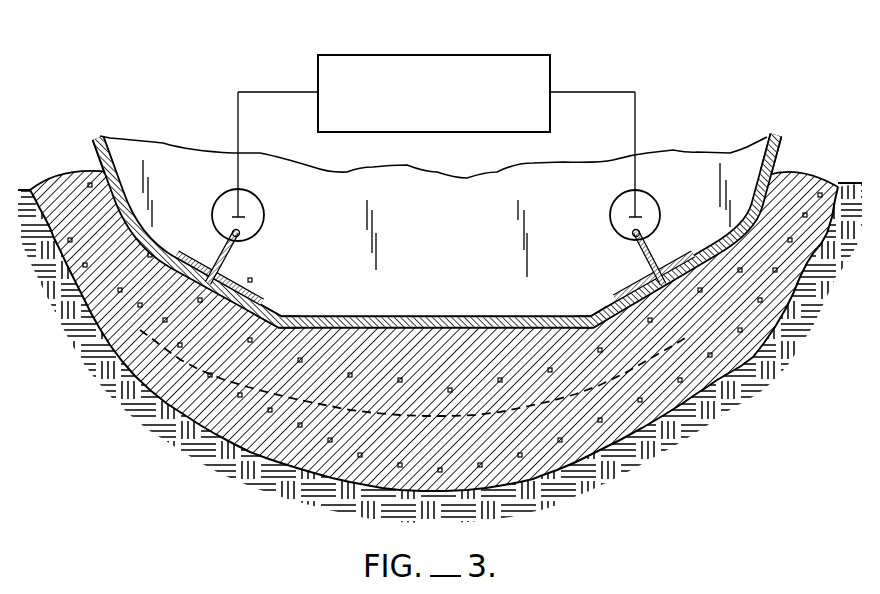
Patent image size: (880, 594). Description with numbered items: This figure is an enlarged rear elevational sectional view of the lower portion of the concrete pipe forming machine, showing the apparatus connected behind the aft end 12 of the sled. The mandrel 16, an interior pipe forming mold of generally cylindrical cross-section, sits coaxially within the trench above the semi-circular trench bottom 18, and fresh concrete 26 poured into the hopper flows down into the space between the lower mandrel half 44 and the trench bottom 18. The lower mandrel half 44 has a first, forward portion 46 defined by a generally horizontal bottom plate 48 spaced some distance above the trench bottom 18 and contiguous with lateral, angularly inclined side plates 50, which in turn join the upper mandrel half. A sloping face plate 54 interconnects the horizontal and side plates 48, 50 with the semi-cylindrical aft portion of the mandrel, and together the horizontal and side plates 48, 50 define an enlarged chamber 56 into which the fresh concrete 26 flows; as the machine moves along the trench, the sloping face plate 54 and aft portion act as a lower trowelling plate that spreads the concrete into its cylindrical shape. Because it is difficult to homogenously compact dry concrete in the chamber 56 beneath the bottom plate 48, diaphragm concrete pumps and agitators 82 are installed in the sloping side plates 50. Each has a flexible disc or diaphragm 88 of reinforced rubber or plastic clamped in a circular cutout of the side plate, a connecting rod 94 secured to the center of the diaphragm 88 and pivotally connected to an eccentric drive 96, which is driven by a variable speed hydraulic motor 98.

The aft end 12 is at (160, 136).
The mandrel 16 is at (92, 145).
The trench bottom 18 is at (97, 346).
The fresh concrete 26 is at (793, 240).
The lower mandrel half 44 is at (792, 143).
The first, forward portion 46 is at (370, 311).
The horizontal bottom plate 48 is at (449, 311).
The side plates 50 is at (272, 311).
The sloping face plate 54 is at (512, 362).
The enlarged chamber 56 is at (322, 372).
The diaphragm concrete pumps and agitators 82 is at (147, 264).
The flexible disc or diaphragm 88 is at (233, 287).
The connecting rod 94 is at (226, 241).
The eccentric drive 96 is at (262, 211).
The variable speed hydraulic motor 98 is at (478, 55).